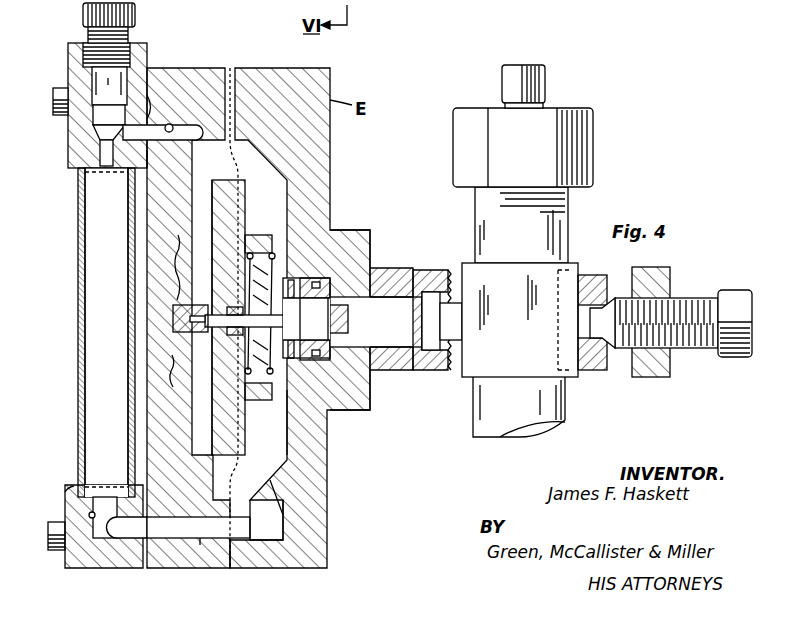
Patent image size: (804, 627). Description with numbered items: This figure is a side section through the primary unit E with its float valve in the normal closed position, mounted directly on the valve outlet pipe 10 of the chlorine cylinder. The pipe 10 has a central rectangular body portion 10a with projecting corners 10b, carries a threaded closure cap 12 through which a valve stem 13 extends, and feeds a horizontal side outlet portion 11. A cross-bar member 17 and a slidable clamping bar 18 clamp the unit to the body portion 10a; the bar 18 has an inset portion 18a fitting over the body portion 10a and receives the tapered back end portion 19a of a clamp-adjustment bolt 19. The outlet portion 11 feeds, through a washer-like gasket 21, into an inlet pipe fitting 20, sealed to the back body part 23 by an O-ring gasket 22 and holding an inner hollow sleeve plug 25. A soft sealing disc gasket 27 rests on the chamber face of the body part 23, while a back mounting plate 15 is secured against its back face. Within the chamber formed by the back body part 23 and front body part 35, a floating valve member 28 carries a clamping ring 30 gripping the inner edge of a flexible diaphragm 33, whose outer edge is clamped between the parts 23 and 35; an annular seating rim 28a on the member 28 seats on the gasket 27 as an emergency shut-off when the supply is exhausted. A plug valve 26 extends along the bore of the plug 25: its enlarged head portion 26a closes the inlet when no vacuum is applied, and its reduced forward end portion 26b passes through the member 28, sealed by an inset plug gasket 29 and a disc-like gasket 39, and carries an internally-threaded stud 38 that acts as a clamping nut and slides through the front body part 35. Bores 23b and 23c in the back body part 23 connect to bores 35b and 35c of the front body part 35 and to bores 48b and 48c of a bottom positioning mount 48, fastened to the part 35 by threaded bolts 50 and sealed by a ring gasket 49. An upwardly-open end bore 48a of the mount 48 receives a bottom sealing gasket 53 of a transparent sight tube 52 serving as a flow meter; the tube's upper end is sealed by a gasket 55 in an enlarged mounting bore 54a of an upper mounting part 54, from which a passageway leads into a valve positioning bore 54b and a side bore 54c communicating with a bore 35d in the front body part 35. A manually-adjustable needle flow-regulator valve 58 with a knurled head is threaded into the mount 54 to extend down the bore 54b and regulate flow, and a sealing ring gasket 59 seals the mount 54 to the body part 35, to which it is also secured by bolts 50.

The valve outlet pipe 10 is at (475, 430).
The central rectangular body portion 10a is at (465, 378).
The top and bottom corners 10b is at (560, 268).
The side outlet portion 11 is at (452, 270).
The threaded closure cap 12 is at (593, 140).
The valve stem 13 is at (545, 85).
The back mounting plate 15 is at (355, 230).
The cross-bar member 17 is at (670, 276).
The slidable clamping bar 18 is at (598, 370).
The inset portion 18a is at (572, 378).
The clamp-adjustment bolt 19 is at (740, 290).
The tapered back end portion 19a is at (602, 305).
The inlet pipe fitting 20 is at (390, 268).
The washer-like gasket 21 is at (415, 272).
The O-ring sealing gasket 22 is at (322, 278).
The back body part 23 is at (300, 68).
The passageway-defining bore 23b is at (272, 508).
The passageway-defining bore 23c is at (268, 540).
The inner hollow sleeve plug 25 is at (312, 282).
The plug valve 26 is at (262, 335).
The seating head portion 26a is at (348, 325).
The reduced-diameter forward end portion 26b is at (197, 340).
The soft sealing disc gasket 27 is at (283, 405).
The floating valve member 28 is at (246, 445).
The annular seating rim 28a is at (268, 235).
The inset plug gasket 29 is at (238, 307).
The clamping ring 30 is at (212, 425).
The flexible diaphragm 33 is at (236, 165).
The front body part 35 is at (205, 68).
The passageway-defining bore 35b is at (203, 540).
The passageway-defining bore 35c is at (172, 520).
The bore 35d is at (171, 125).
The internally-threaded stud 38 is at (178, 285).
The disc-like gasket 39 is at (210, 335).
The bottom positioning mount 48 is at (65, 562).
The upwardly-open end bore 48a is at (90, 497).
The passageway-defining bore 48b is at (117, 540).
The passageway-defining bore 48c is at (88, 515).
The ring gasket 49 is at (148, 505).
The threaded bolts 50 is at (53, 98).
The sight tube 52 is at (78, 378).
The bottom sealing gasket 53 is at (68, 495).
The upper mounting part 54 is at (70, 60).
The mounting bore portion 54a is at (115, 176).
The valve positioning bore 54b is at (147, 160).
The side bore 54c is at (148, 108).
The gasket 55 is at (100, 160).
The needle flow-regulator valve 58 is at (83, 20).
The sealing ring gasket 59 is at (128, 140).